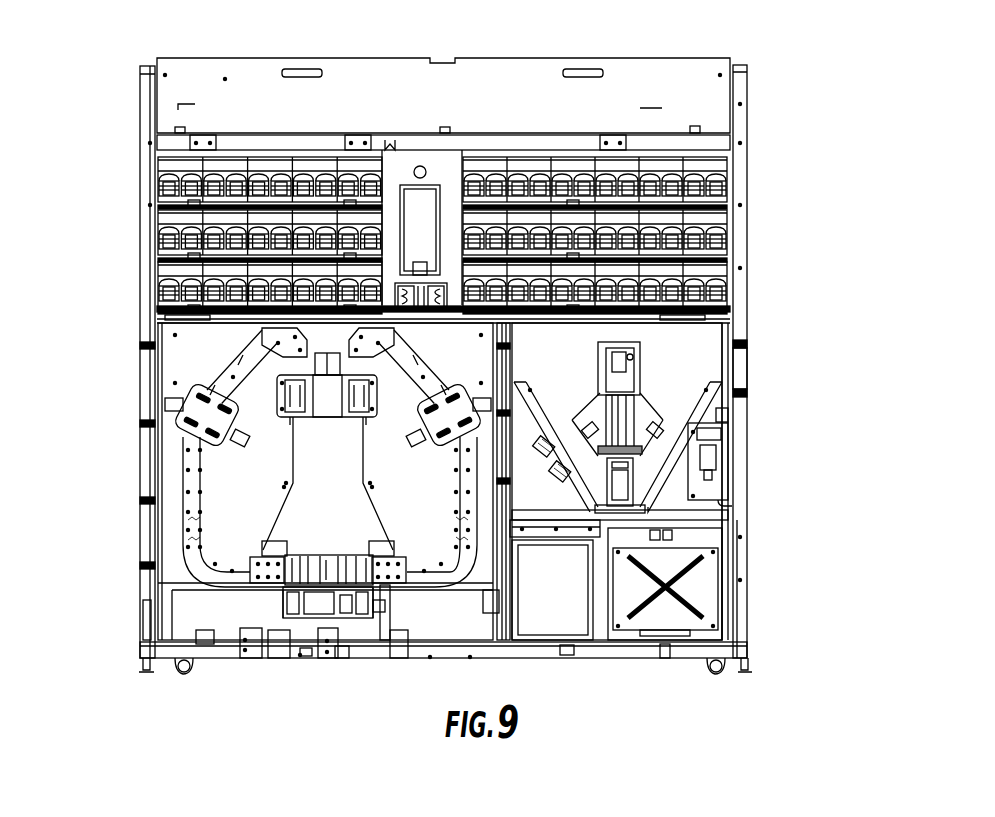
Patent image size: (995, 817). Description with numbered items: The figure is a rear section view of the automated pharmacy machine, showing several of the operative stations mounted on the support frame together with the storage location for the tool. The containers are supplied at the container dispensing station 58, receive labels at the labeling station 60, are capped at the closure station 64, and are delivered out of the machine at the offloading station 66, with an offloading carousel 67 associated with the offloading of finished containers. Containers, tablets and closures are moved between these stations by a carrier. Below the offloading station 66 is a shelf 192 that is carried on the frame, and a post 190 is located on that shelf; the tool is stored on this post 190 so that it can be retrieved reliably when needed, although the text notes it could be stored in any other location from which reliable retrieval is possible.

The container dispensing station 58 is at (137, 520).
The labeling station 60 is at (318, 672).
The closure station 64 is at (755, 360).
The offloading station 66 is at (752, 228).
The offloading carousel 67 is at (395, 289).
The post 190 is at (530, 325).
The shelf 192 is at (512, 325).